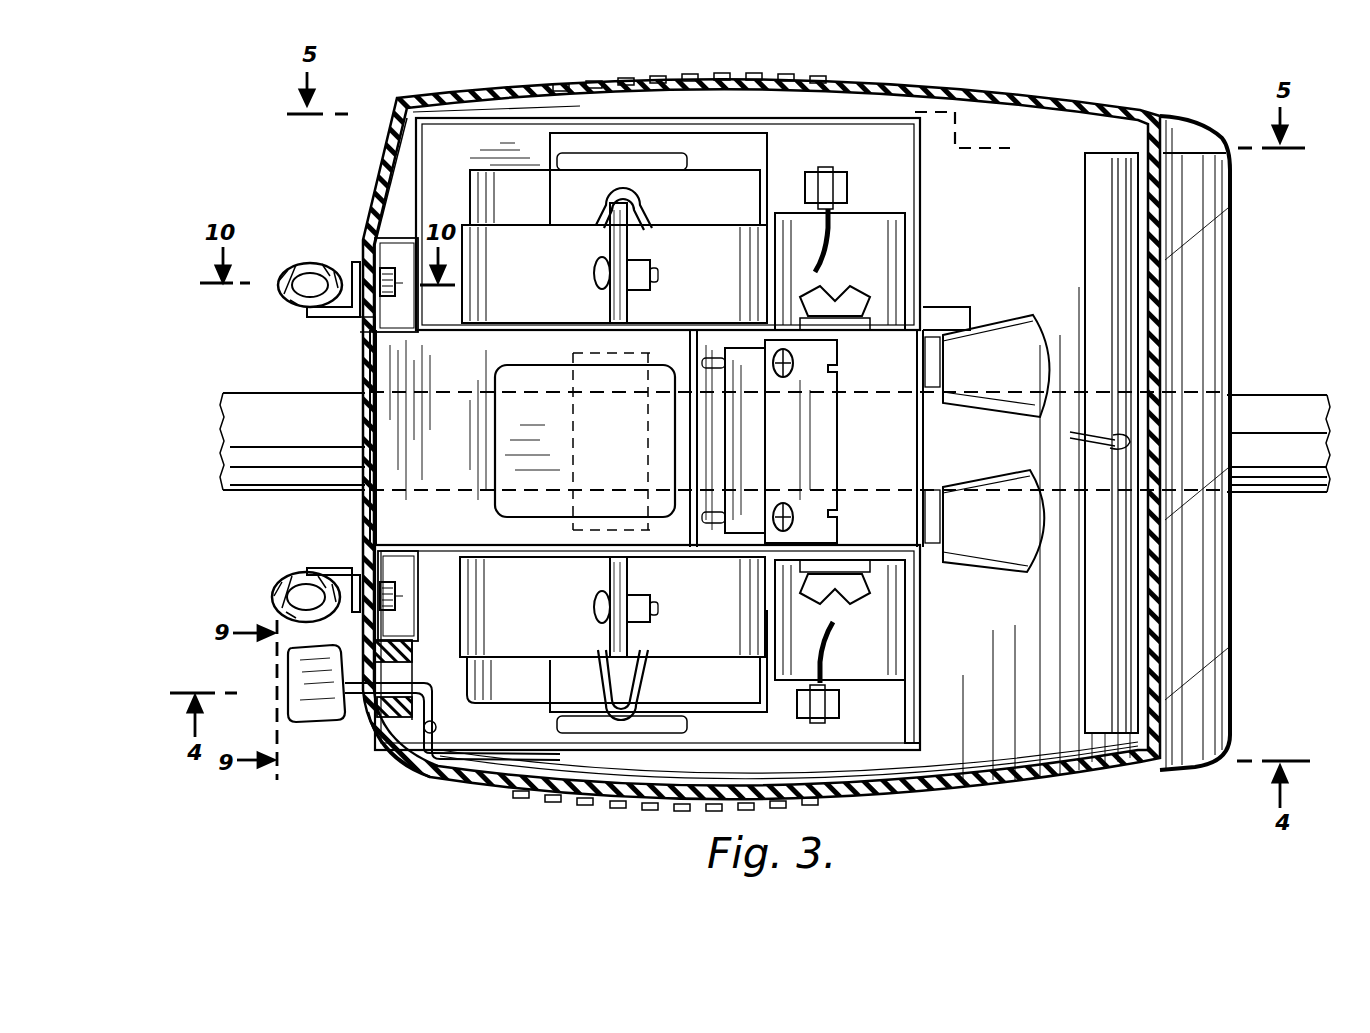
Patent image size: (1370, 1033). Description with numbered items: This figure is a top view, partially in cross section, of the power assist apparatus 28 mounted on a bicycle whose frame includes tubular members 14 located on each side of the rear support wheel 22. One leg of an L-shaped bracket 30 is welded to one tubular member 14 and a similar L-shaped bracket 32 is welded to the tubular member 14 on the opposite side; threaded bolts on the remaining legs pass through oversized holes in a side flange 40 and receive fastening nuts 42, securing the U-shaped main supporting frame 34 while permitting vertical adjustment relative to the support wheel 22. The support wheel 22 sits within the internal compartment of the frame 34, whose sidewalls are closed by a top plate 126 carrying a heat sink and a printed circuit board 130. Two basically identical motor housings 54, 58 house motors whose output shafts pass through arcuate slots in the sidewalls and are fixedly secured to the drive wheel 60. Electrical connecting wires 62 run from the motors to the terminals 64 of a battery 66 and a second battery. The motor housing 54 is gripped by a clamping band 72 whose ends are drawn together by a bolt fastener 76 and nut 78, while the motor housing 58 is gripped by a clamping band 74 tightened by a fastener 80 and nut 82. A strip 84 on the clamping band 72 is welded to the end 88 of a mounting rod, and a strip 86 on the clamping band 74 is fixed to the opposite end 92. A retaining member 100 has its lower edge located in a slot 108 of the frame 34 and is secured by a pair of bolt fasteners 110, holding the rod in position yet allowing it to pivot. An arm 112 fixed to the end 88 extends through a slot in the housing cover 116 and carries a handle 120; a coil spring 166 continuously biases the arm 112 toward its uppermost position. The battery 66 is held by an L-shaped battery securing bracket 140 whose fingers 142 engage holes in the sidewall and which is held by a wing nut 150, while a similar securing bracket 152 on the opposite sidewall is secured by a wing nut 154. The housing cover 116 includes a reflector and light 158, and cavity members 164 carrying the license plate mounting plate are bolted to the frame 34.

The tubular members 14 is at (283, 298).
The rear support wheel 22 is at (243, 428).
The power assist apparatus 28 is at (1018, 82).
The L-shaped bracket 30 is at (360, 270).
The L-shaped bracket 32 is at (330, 567).
The main supporting frame 34 is at (360, 330).
The side flange 40 is at (412, 650).
The fastening nuts 42 is at (385, 275).
The motor housing 54 is at (660, 700).
The motor housing 58 is at (740, 190).
The drive wheel 60 is at (590, 320).
The electrical connecting wires 62 is at (598, 207).
The terminals 64 is at (835, 710).
The battery 66 is at (905, 713).
The clamping band 72 is at (520, 680).
The clamping band 74 is at (510, 235).
The bolt fastener 76 is at (598, 602).
The nut 78 is at (650, 615).
The fastener 80 is at (597, 270).
The nut 82 is at (650, 283).
The strip 84 is at (760, 690).
The strip 86 is at (785, 200).
The end of mounting rod 88 is at (790, 728).
The end of mounting rod 92 is at (852, 312).
The retaining member 100 is at (765, 420).
The slot 108 is at (830, 465).
The bolt fasteners 110 is at (800, 358).
The arm 112 is at (490, 770).
The housing cover 116 is at (385, 154).
The handle 120 is at (333, 718).
The top plate 126 is at (468, 377).
The printed circuit board 130 is at (553, 422).
The L-shaped battery securing bracket 140 is at (905, 590).
The fingers 142 is at (870, 532).
The wing nut 150 is at (880, 585).
The securing bracket 152 is at (860, 330).
The wing nut 154 is at (865, 300).
The reflector and light 158 is at (1215, 300).
The cavity members 164 is at (1028, 325).
The coil spring 166 is at (425, 780).